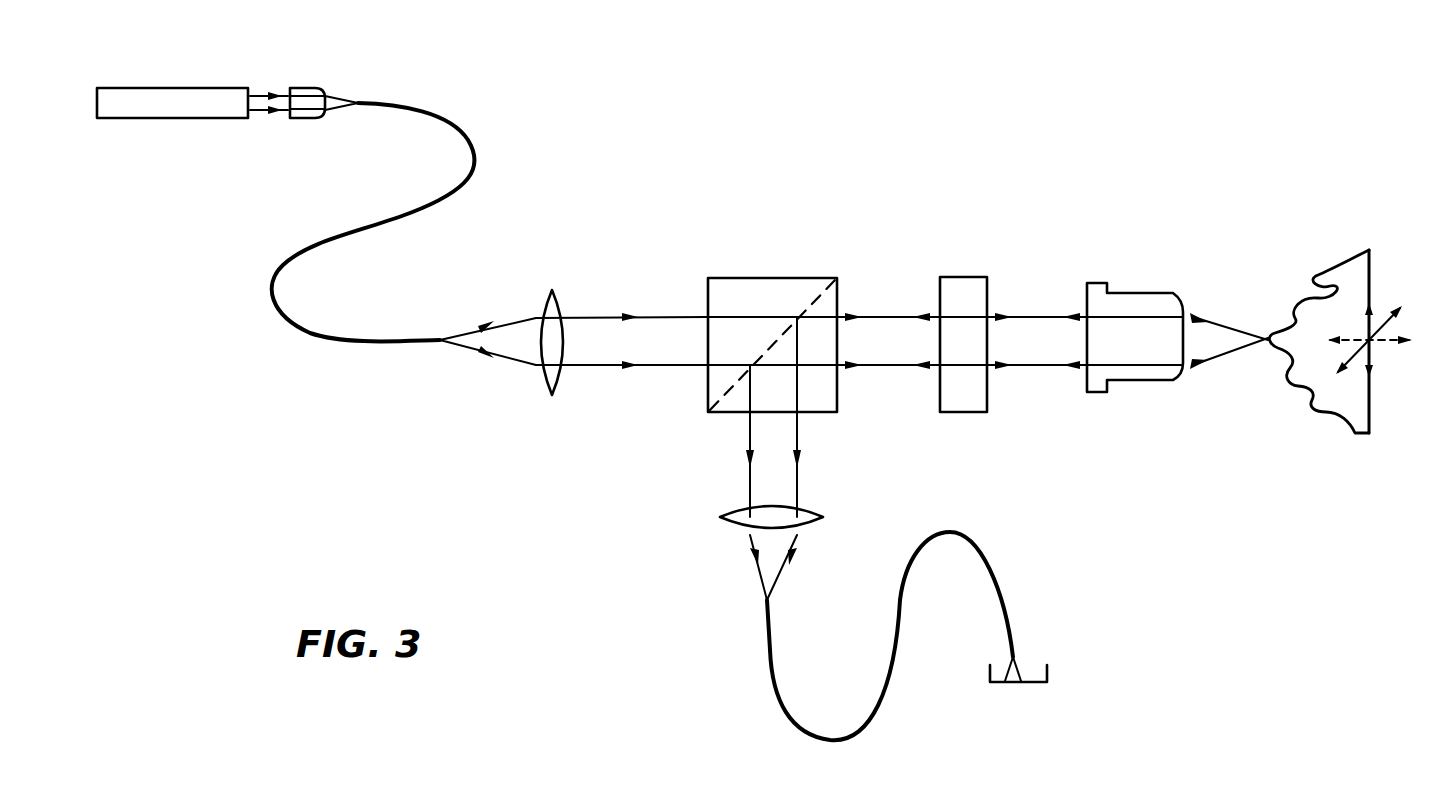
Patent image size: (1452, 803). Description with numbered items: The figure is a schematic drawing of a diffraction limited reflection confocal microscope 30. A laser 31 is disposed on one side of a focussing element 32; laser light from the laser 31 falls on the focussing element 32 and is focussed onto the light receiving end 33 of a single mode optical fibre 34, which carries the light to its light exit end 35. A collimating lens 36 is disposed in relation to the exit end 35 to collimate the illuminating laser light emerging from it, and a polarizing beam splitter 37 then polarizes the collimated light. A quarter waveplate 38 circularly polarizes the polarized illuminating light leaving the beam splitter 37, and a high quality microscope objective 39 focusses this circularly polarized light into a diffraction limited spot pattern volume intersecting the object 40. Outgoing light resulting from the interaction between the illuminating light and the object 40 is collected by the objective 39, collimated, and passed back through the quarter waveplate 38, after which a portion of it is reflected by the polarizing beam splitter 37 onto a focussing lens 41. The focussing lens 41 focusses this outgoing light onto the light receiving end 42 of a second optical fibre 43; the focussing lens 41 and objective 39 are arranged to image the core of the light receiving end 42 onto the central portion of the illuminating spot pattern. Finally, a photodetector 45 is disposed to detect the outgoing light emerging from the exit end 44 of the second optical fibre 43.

The diffraction limited reflection confocal microscope 30 is at (1028, 112).
The laser 31 is at (158, 95).
The focussing element 32 is at (297, 90).
The light receiving end 33 is at (363, 98).
The single mode optical fibre 34 is at (473, 152).
The light exit end 35 is at (433, 343).
The collimating lens 36 is at (553, 296).
The polarizing beam splitter 37 is at (752, 286).
The quarter waveplate 38 is at (962, 283).
The microscope objective 39 is at (1123, 293).
The object 40 is at (1320, 272).
The focussing lens 41 is at (723, 530).
The light receiving end 42 is at (757, 608).
The second optical fibre 43 is at (780, 707).
The exit end 44 is at (1017, 656).
The photodetector 45 is at (1033, 684).